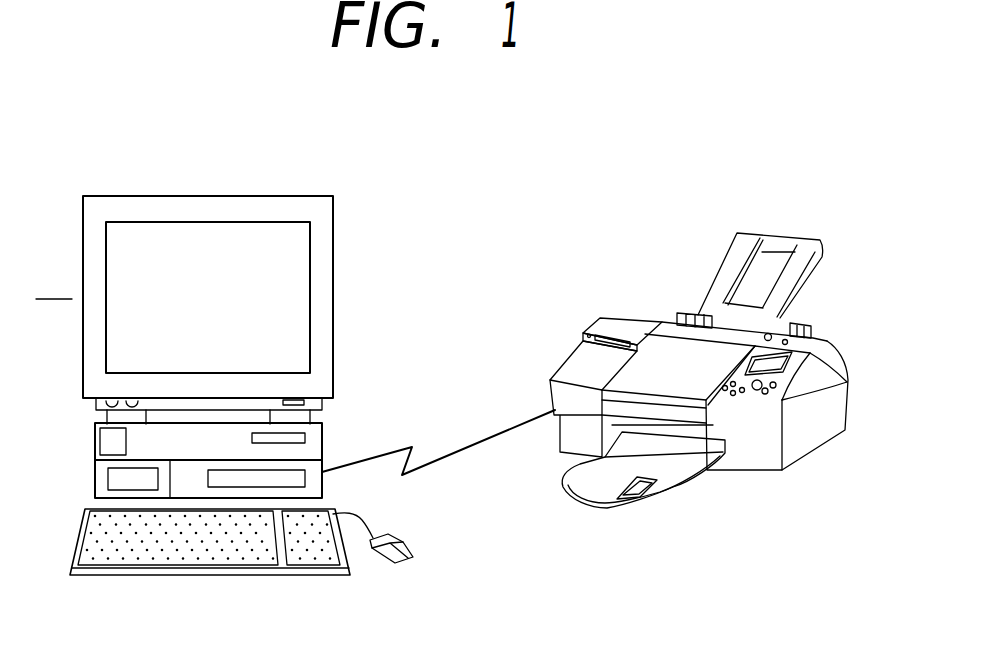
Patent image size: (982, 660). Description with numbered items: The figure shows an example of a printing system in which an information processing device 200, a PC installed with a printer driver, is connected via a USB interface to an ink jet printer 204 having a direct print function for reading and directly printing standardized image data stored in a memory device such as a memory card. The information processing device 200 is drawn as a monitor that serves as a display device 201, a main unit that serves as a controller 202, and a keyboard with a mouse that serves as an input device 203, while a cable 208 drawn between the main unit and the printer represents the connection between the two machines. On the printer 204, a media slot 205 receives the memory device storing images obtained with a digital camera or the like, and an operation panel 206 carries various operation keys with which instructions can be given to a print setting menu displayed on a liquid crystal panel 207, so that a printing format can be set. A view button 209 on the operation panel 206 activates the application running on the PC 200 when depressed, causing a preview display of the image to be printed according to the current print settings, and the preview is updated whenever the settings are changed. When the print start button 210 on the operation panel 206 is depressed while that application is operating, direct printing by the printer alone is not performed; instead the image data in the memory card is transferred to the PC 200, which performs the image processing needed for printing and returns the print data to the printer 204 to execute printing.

The information processing device 200 is at (235, 177).
The display device 201 is at (334, 281).
The controller 202 is at (322, 436).
The input device 203 is at (236, 577).
The printer 204 is at (806, 330).
The media slot 205 is at (594, 330).
The operation panel 206 is at (773, 386).
The liquid crystal panel 207 is at (763, 360).
The connection cable 208 is at (495, 432).
The view button 209 is at (764, 396).
The print start button 210 is at (754, 391).